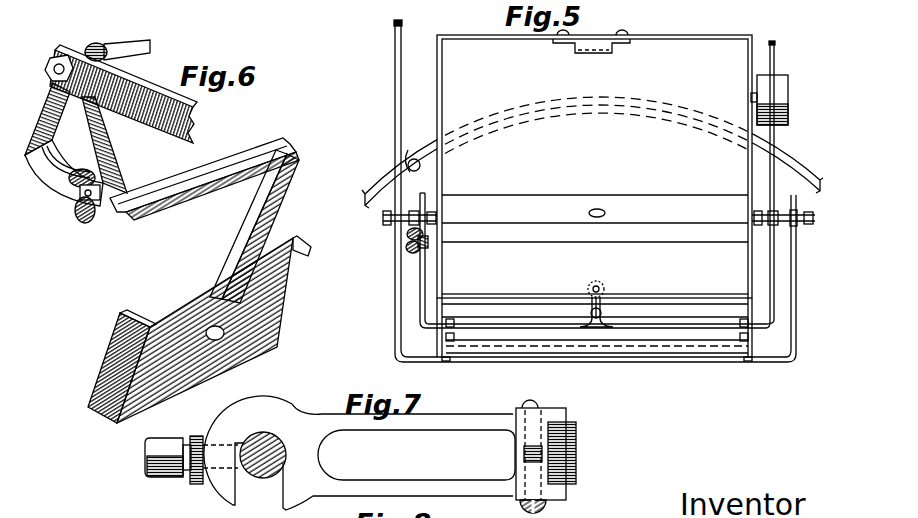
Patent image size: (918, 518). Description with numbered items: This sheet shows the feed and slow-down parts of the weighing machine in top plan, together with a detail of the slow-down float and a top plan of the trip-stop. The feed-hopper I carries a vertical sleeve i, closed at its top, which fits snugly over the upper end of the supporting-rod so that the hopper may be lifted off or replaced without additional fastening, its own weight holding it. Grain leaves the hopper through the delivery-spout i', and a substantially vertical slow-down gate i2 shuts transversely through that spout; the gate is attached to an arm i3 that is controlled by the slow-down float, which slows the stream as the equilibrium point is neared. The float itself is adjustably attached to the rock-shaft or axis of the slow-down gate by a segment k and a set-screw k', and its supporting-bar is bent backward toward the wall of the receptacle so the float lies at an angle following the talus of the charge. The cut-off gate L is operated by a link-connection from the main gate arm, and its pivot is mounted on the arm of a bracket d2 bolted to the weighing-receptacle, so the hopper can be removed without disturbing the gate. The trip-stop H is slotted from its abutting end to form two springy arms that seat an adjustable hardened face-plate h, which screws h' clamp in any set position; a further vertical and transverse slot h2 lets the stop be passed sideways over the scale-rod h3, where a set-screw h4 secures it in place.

In FIG. 5, the feed-hopper I is at (594, 196).
In FIG. 5, the vertical sleeve i is at (591, 53).
In FIG. 5, the delivery-spout i' is at (595, 310).
In FIG. 5, the slow-down gate i2 is at (521, 327).
In FIG. 5, the arm i3 is at (762, 276).
In FIG. 6, the arm i3 is at (121, 91).
In FIG. 5, the segment k is at (590, 184).
In FIG. 6, the segment k is at (163, 253).
In FIG. 5, the set-screw k' is at (402, 257).
In FIG. 6, the set-screw k' is at (74, 208).
In FIG. 5, the bracket d2 is at (816, 243).
In FIG. 5, the cut-off gate L is at (675, 348).
In FIG. 7, the trip-stop H is at (437, 470).
In FIG. 7, the face-plate h is at (569, 453).
In FIG. 7, the screws h' is at (529, 456).
In FIG. 7, the vertical and transverse slot h2 is at (227, 471).
In FIG. 7, the scale-rod h3 is at (284, 464).
In FIG. 7, the set-screw h4 is at (146, 462).